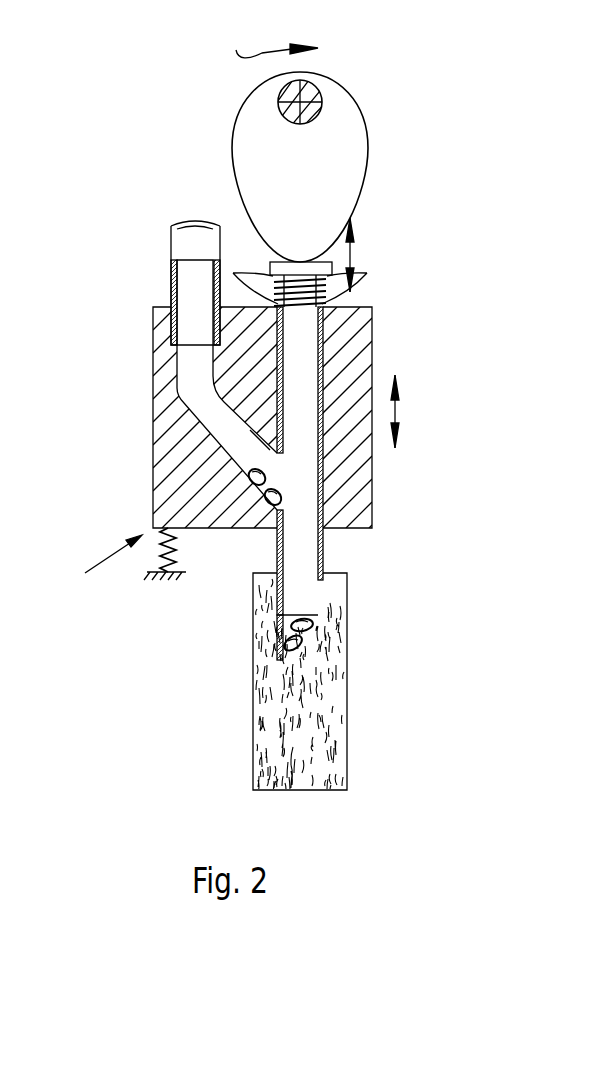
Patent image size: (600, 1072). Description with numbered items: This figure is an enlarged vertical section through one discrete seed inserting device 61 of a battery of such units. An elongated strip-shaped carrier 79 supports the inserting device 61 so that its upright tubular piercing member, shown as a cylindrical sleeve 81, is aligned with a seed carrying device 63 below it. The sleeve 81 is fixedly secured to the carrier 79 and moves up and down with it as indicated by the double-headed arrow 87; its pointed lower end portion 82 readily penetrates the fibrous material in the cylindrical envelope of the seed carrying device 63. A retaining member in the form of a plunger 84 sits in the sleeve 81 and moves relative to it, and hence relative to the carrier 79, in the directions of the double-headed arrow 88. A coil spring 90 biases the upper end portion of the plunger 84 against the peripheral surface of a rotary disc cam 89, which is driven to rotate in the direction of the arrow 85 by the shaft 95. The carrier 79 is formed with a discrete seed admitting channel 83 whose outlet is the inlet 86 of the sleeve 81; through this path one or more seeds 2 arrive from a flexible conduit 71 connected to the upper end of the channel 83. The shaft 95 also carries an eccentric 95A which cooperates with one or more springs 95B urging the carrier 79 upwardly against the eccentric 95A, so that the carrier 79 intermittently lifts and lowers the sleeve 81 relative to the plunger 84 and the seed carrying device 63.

The arrow 85 is at (274, 42).
The shaft 95 is at (322, 106).
The rotary disc cam 89 is at (353, 153).
The double-headed arrow 88 is at (354, 250).
The eccentric 95A is at (252, 272).
The coil spring 90 is at (330, 300).
The flexible conduit 71 is at (187, 238).
The carrier 79 is at (163, 488).
The seed admitting channel 83 is at (197, 387).
The inlet 86 is at (264, 463).
The double-headed arrow 87 is at (404, 412).
The tubular piercing member 81 is at (324, 543).
The plunger 84 is at (305, 562).
The lower end portion 82 is at (278, 658).
The seed carrying device 63 is at (267, 722).
The seeds 2 is at (272, 504).
The seed inserting device 61 is at (99, 564).
The springs 95B is at (155, 548).